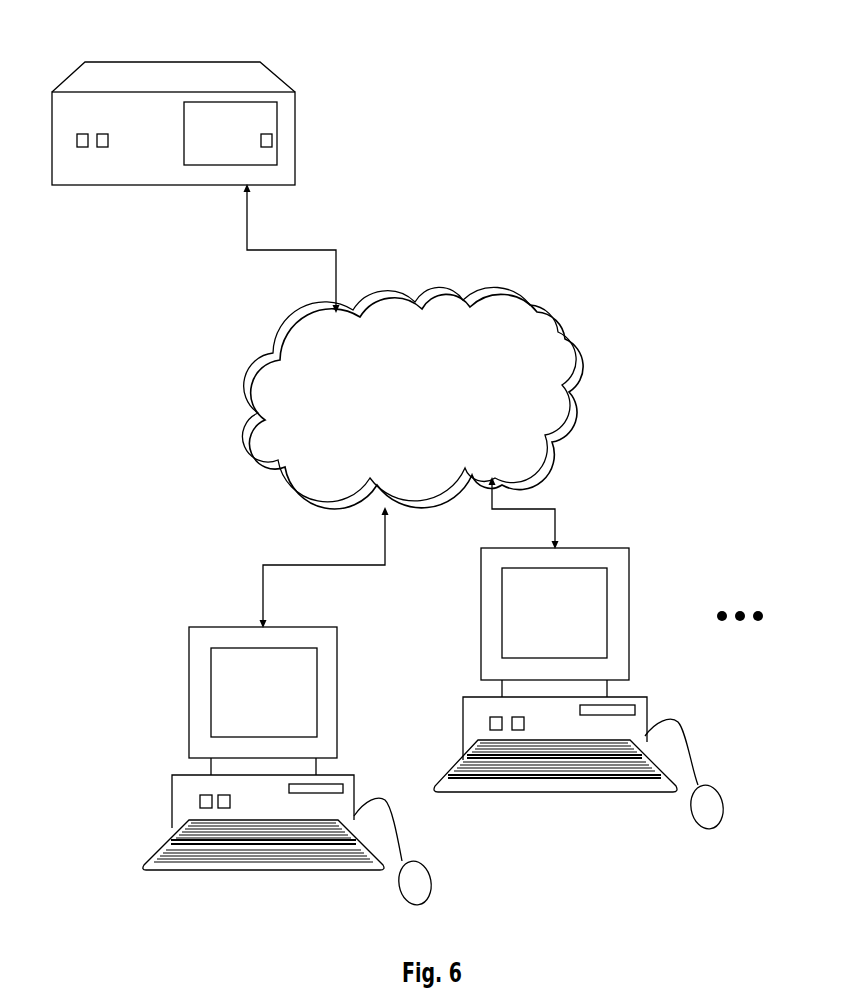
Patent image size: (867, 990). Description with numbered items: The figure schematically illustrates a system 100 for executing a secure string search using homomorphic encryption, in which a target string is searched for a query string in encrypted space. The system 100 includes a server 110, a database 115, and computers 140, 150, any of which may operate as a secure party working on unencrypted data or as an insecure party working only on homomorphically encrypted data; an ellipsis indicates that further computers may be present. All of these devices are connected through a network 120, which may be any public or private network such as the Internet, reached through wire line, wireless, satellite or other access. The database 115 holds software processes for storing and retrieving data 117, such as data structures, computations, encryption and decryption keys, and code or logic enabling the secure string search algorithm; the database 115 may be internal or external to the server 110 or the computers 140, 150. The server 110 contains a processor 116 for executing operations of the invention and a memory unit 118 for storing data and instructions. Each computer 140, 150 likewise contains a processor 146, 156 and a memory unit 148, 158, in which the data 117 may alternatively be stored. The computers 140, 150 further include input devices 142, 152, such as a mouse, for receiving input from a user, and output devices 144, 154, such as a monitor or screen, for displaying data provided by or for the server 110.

The system 100 is at (641, 183).
The server 110 is at (189, 83).
The database 115 is at (236, 133).
The processor 116 is at (82, 147).
The data 117 is at (268, 147).
The memory unit 118 is at (100, 134).
The network 120 is at (412, 398).
The computer 140 is at (233, 627).
The input device 142 is at (428, 859).
The output device 144 is at (294, 688).
The processor 146 is at (200, 800).
The memory unit 148 is at (219, 795).
The computer 150 is at (622, 548).
The input device 152 is at (717, 786).
The output device 154 is at (587, 610).
The processor 156 is at (490, 722).
The memory unit 158 is at (512, 717).